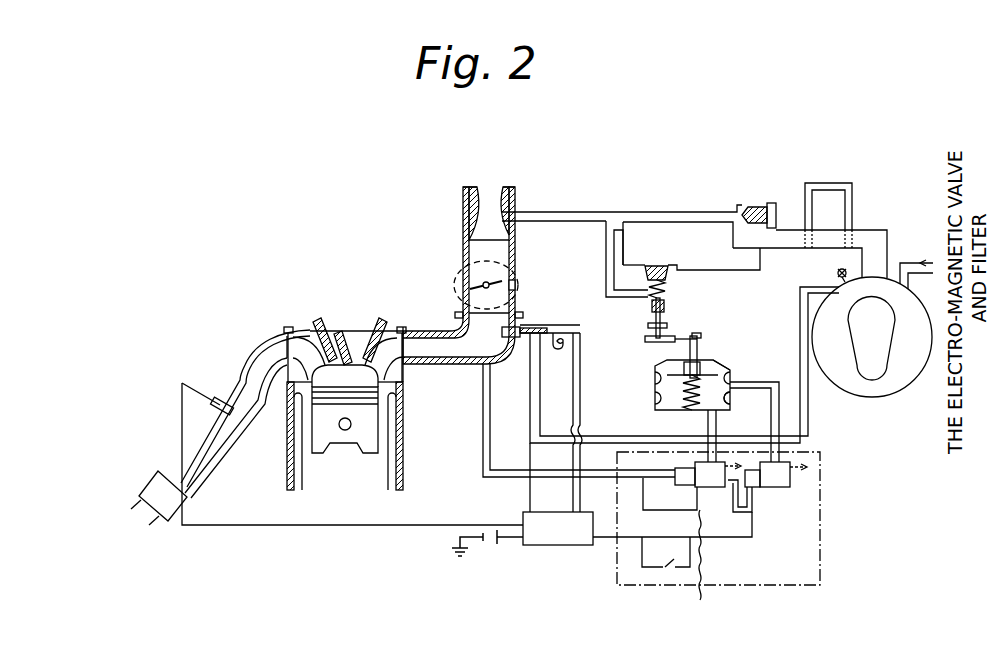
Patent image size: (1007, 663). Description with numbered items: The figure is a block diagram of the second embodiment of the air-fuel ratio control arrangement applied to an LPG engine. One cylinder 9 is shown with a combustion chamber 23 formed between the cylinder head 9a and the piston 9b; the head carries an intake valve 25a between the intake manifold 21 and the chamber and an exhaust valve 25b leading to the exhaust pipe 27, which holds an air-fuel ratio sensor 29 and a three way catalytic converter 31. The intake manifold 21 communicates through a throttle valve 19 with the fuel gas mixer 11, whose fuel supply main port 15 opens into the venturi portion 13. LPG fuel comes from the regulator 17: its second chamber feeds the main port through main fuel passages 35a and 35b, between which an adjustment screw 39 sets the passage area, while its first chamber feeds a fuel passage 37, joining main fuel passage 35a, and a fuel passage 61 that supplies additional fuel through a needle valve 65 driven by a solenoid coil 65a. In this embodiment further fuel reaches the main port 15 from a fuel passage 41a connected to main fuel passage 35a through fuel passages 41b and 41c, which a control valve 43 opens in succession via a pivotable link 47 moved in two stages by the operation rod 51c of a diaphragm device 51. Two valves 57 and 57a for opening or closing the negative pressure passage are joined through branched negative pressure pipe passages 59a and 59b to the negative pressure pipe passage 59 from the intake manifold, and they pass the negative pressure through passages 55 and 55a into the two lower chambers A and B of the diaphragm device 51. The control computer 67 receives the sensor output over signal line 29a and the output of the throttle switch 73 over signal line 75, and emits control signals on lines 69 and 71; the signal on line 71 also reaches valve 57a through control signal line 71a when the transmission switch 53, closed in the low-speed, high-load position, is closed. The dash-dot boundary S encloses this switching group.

The cylinder 9 is at (405, 471).
The cylinder head 9a is at (343, 358).
The piston 9b is at (325, 433).
The fuel gas mixer 11 is at (463, 252).
The venturi portion 13 is at (470, 212).
The fuel supply main port 15 is at (500, 216).
The regulator 17 is at (880, 396).
The throttle valve 19 is at (462, 268).
The intake manifold 21 is at (457, 358).
The combustion chamber 23 is at (345, 370).
The intake valve 25a is at (383, 337).
The exhaust valve 25b is at (308, 330).
The exhaust pipe 27 is at (268, 348).
The air-fuel ratio sensor 29 is at (220, 400).
The signal line 29a is at (290, 526).
The three way catalytic converter 31 is at (163, 511).
The main fuel passage 35a is at (877, 243).
The main fuel passage 35b is at (706, 212).
The fuel passage 37 is at (830, 183).
The adjustment screw 39 is at (770, 204).
The fuel passage 41a is at (722, 268).
The fuel passage 41b is at (625, 237).
The fuel passage 41c is at (607, 245).
The control valve 43 is at (652, 263).
The pivotable link 47 is at (646, 339).
The diaphragm device 51 is at (655, 406).
The operation rod 51c is at (699, 342).
The transmission switch 53 is at (665, 568).
The negative pressure pipe passage 55 is at (776, 380).
The negative pressure pipe passage 55a is at (717, 423).
The valve 57 is at (780, 488).
The valve 57a is at (712, 488).
The negative pressure pipe passage 59 is at (483, 426).
The branched negative pressure pipe passage 59a is at (723, 513).
The branched negative pressure pipe passage 59b is at (668, 474).
The fuel passage 61 is at (530, 424).
The needle valve 65 is at (548, 324).
The solenoid coil 65a is at (564, 347).
The control computer 67 is at (558, 541).
The control signal line 69 is at (581, 392).
The control signal line 71 is at (753, 520).
The control signal line 71a is at (706, 566).
The switch 73 is at (513, 285).
The signal line 75 is at (530, 446).
The lower chamber A is at (712, 364).
The lower chamber B is at (725, 399).
The control system S is at (822, 537).